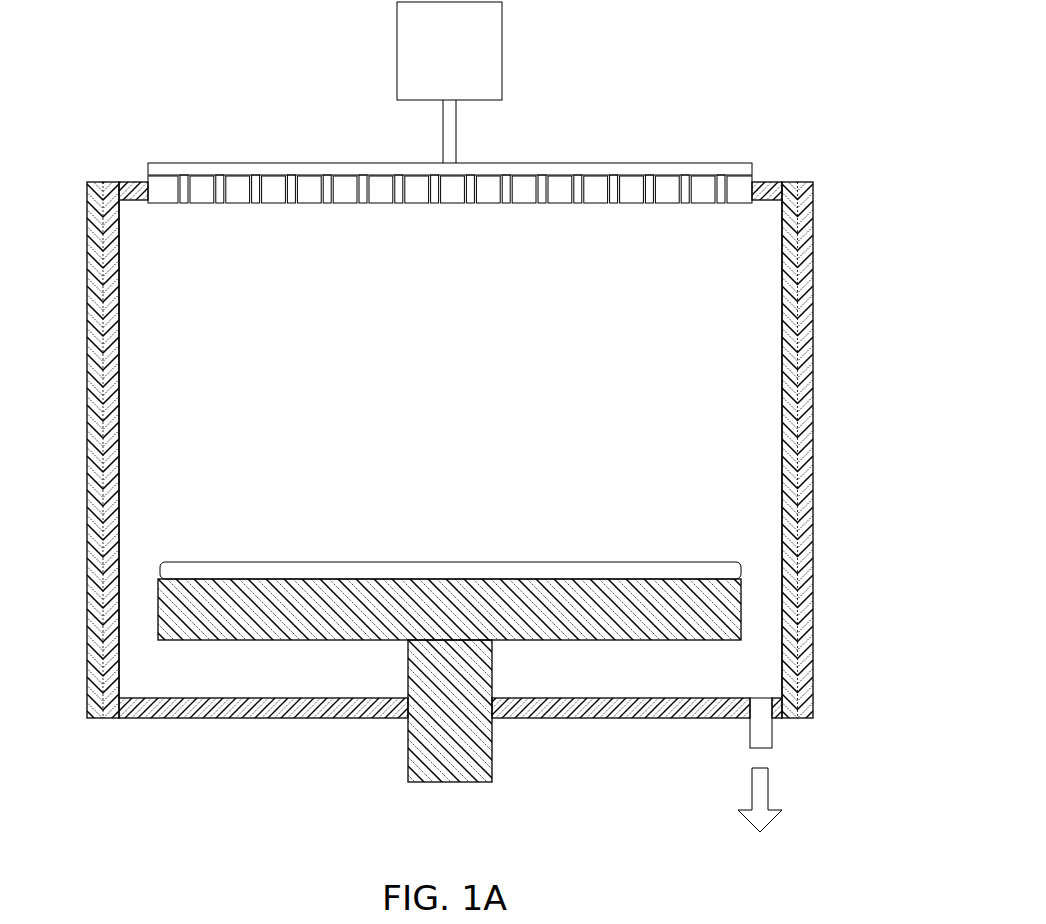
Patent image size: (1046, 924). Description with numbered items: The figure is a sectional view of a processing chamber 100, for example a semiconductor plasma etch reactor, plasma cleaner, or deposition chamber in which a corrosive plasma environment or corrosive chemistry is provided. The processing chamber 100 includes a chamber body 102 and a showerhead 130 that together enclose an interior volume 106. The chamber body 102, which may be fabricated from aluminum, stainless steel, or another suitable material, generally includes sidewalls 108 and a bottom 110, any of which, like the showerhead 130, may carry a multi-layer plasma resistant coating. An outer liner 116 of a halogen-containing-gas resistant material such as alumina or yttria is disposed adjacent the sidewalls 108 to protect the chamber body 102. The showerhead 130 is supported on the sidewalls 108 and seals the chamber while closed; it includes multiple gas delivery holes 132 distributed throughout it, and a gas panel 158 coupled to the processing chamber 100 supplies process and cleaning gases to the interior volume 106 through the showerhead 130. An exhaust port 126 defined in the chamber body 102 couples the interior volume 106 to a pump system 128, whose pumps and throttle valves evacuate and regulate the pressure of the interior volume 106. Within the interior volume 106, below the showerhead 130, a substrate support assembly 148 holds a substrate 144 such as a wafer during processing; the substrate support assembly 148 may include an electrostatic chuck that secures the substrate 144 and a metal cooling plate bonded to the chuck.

The processing chamber 100 is at (808, 87).
The chamber body 102 is at (838, 296).
The interior volume 106 is at (720, 302).
The sidewalls 108 is at (803, 407).
The bottom 110 is at (202, 717).
The outer liner 116 is at (782, 353).
The exhaust port 126 is at (750, 722).
The pump system 128 is at (772, 862).
The showerhead 130 is at (610, 151).
The gas delivery holes 132 is at (228, 187).
The substrate 144 is at (318, 562).
The substrate support assembly 148 is at (524, 662).
The gas panel 158 is at (467, 62).